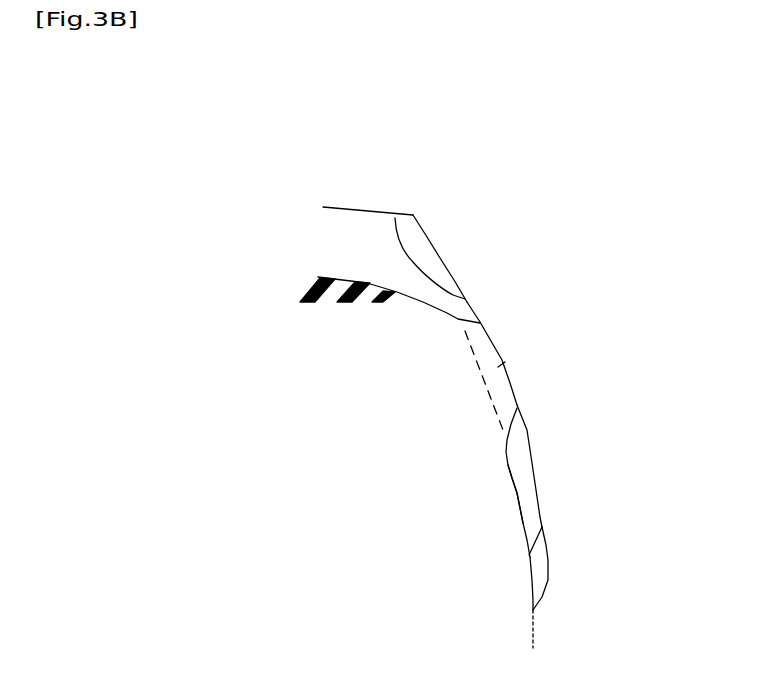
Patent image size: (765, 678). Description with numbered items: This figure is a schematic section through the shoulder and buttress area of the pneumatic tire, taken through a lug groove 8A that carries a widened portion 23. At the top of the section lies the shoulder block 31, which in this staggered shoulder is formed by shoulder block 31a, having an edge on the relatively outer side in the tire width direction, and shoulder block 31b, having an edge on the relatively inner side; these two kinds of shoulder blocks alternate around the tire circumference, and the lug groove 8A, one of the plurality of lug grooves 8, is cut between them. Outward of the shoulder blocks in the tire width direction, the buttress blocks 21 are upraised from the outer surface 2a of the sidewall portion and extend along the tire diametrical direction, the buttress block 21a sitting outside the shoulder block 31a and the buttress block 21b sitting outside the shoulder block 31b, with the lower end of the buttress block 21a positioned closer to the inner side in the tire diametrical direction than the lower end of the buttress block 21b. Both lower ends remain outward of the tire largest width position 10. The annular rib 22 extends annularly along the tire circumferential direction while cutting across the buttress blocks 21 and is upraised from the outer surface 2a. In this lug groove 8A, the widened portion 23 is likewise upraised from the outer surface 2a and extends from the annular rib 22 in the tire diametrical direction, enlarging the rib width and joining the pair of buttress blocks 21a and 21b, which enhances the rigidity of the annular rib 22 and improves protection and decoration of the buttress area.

The shoulder block 31 is at (404, 217).
The shoulder block 31b is at (355, 207).
The shoulder block 31a is at (425, 228).
The lug groove 8 is at (367, 267).
The lug groove 8A is at (343, 265).
The widened portion 23 is at (488, 330).
The annular rib 22 is at (505, 352).
The buttress block 21 is at (594, 507).
The buttress block 21b is at (533, 473).
The buttress block 21a is at (548, 557).
The outer surface 2a is at (518, 497).
The tire largest width position 10 is at (533, 628).